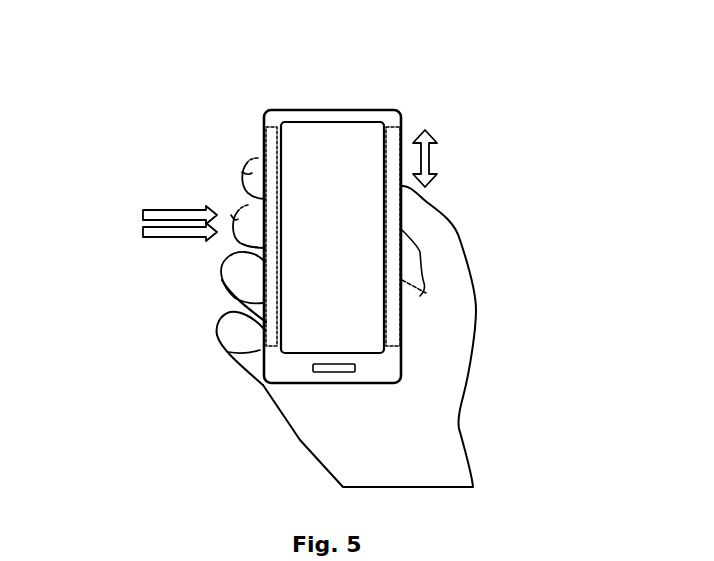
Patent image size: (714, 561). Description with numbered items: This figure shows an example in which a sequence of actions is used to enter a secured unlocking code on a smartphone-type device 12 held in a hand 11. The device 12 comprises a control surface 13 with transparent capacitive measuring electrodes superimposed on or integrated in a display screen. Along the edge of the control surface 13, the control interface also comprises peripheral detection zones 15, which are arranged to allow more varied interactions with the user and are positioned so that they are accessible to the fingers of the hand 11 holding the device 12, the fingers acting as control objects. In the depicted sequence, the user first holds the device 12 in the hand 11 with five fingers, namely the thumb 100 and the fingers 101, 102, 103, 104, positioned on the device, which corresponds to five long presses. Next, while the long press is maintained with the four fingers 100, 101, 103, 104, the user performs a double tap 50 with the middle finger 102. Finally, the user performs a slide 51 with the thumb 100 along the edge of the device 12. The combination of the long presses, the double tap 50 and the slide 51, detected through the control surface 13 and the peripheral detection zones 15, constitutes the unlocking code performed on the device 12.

The hand 11 is at (460, 398).
The device 12 is at (330, 110).
The control surface 13 is at (300, 145).
The peripheral detection zones 15 is at (395, 323).
The double tap 50 is at (142, 214).
The slide 51 is at (433, 158).
The thumb 100 is at (410, 205).
The finger 101 is at (250, 170).
The middle finger 102 is at (238, 223).
The finger 103 is at (220, 275).
The finger 104 is at (220, 336).